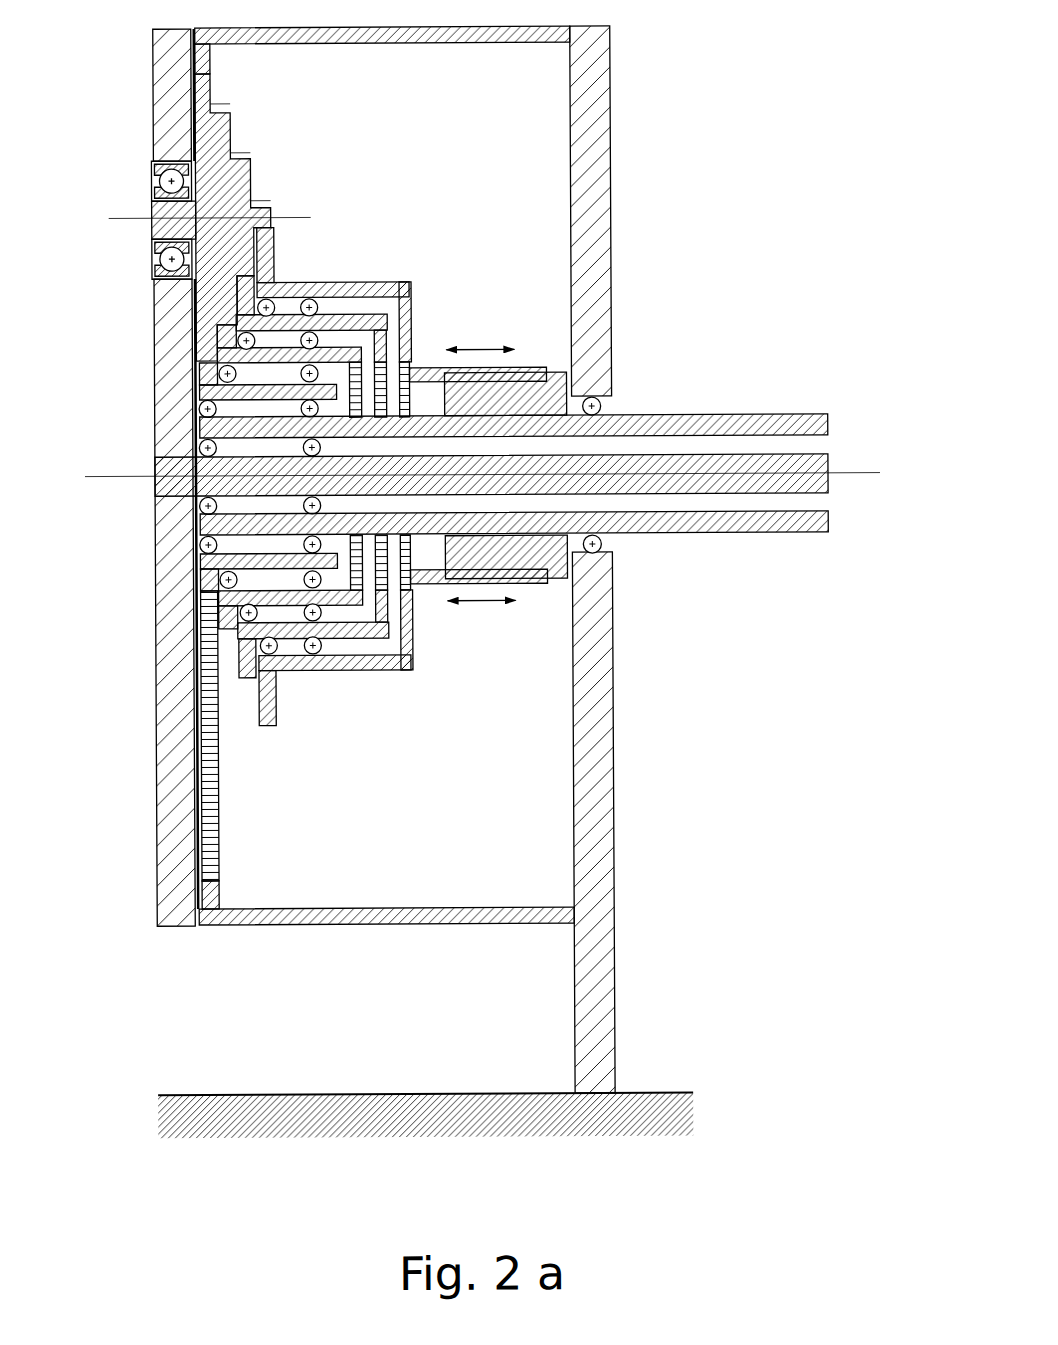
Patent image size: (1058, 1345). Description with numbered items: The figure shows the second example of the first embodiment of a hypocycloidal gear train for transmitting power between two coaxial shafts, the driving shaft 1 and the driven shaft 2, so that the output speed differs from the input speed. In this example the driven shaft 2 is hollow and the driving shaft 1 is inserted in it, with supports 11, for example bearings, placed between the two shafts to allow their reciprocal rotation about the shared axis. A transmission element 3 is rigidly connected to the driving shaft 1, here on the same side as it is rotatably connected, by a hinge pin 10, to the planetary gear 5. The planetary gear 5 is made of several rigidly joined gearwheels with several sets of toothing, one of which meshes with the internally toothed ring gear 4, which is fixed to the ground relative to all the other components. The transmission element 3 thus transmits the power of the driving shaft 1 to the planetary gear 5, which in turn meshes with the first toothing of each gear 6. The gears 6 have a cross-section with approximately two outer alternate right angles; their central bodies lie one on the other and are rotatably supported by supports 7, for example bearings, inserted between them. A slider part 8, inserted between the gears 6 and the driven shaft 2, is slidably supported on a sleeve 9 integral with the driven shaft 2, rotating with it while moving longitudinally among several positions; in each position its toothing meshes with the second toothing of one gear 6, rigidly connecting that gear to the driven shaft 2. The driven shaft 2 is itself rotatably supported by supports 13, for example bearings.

The driving shaft 1 is at (740, 466).
The driven shaft 2 is at (713, 415).
The transmission element 3 is at (154, 712).
The ring gear 4 is at (214, 60).
The planetary gear 5 is at (256, 179).
The gear 6 is at (298, 283).
The support 7 is at (320, 300).
The slider part 8 is at (536, 367).
The sleeve 9 is at (549, 393).
The hinge pin 10 is at (147, 180).
The support 11 is at (196, 447).
The support 13 is at (601, 405).